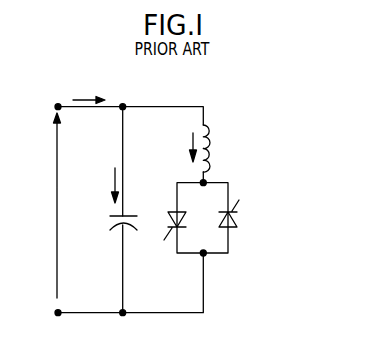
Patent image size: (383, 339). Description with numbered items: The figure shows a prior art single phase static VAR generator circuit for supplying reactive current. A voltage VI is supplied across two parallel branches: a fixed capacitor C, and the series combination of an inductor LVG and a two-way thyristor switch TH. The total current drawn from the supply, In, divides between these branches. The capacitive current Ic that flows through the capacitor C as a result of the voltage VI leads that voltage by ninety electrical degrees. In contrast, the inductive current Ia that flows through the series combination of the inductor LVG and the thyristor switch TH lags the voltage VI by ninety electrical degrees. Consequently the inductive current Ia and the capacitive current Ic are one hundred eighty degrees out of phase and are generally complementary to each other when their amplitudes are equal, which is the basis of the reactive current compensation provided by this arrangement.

The input current In is at (84, 98).
The voltage VI is at (55, 205).
The capacitive current Ic is at (114, 184).
The fixed capacitor C is at (108, 222).
The inductor LVG is at (212, 130).
The inductive current Ia is at (191, 138).
The two-way thyristor switch TH is at (210, 232).